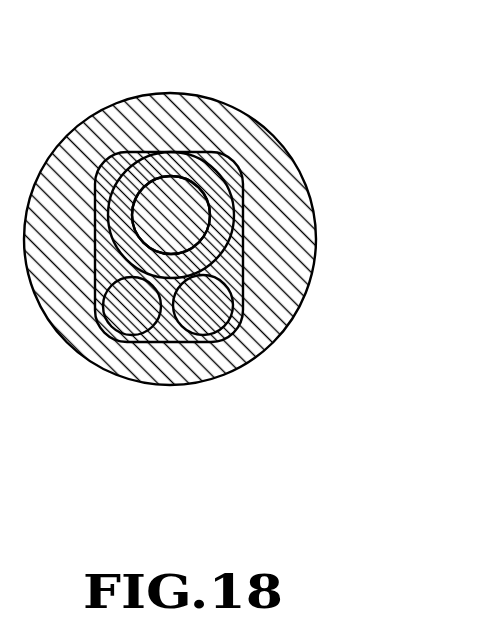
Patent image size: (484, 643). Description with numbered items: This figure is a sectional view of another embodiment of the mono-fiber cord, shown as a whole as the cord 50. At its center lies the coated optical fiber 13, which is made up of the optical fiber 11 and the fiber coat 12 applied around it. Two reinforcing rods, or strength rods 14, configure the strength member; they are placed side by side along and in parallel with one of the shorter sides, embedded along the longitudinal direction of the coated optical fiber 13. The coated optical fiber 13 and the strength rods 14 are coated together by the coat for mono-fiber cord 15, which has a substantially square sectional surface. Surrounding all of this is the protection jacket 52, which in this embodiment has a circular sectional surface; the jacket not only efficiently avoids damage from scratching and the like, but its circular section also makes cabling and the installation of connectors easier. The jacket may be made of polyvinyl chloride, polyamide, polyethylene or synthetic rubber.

The cable 50 is at (227, 90).
The protection jacket 52 is at (175, 367).
The coated optical fiber 13 is at (389, 138).
The optical fiber 11 is at (193, 203).
The fiber coat 12 is at (223, 226).
The coat for mono-fiber cord 15 is at (225, 270).
The reinforcing rods 14 is at (125, 320).